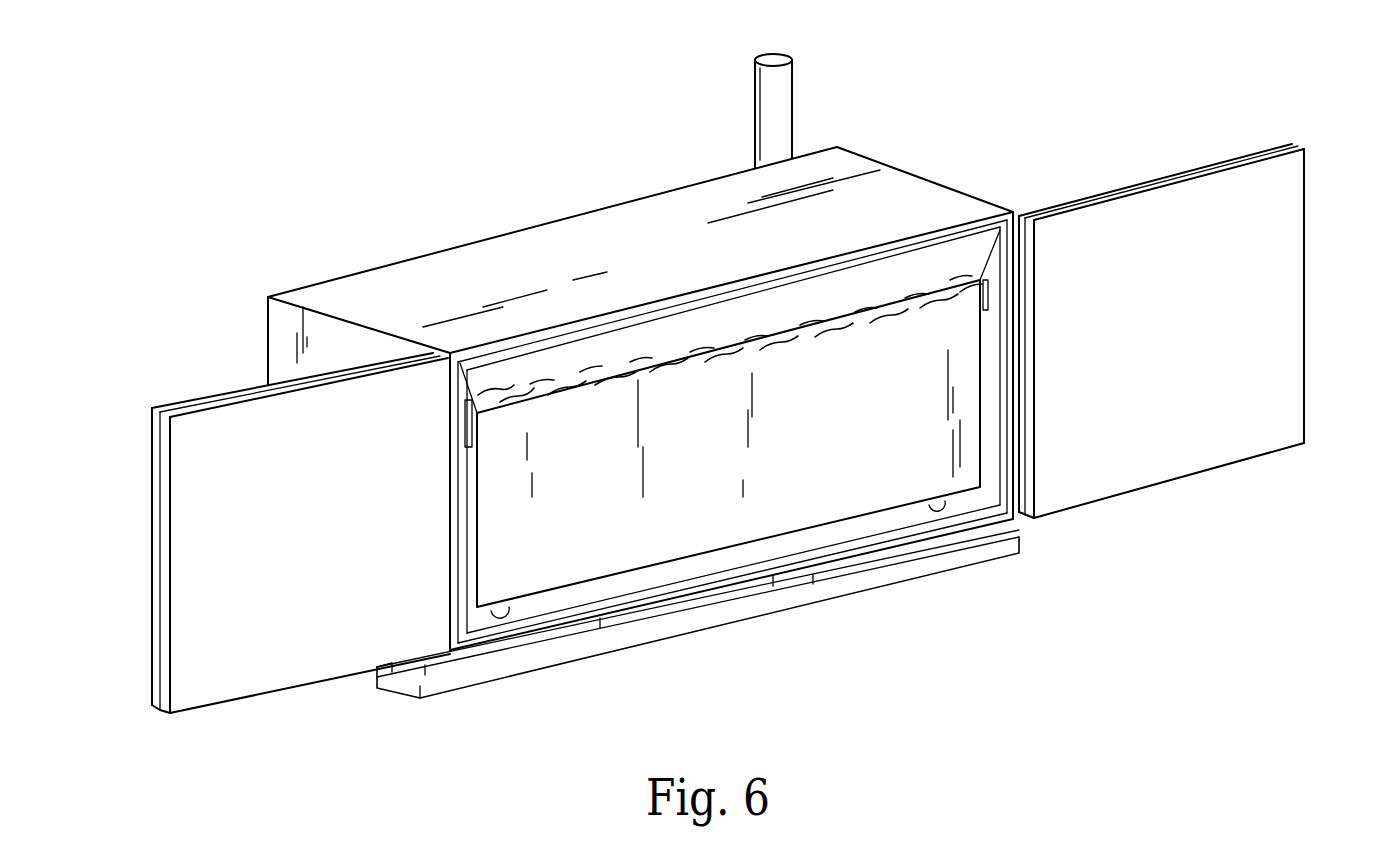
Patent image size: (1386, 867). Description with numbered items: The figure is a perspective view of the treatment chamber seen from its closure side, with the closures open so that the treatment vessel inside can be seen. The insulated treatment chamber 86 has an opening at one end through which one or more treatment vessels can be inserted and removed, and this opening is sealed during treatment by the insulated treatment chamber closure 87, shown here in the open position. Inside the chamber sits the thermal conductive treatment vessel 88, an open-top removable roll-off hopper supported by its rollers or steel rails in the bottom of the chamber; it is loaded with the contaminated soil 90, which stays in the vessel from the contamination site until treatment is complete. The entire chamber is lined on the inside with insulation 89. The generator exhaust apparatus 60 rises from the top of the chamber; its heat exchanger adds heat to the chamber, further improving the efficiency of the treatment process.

The generator exhaust apparatus 60 is at (768, 55).
The insulated treatment chamber 86 is at (613, 222).
The insulated treatment chamber closure 87 is at (148, 518).
The thermal conductive treatment vessel 88 is at (812, 488).
The insulation 89 is at (552, 338).
The contaminated soil 90 is at (872, 288).